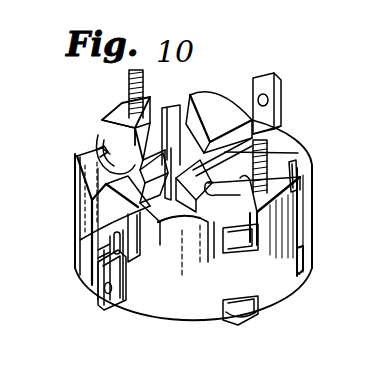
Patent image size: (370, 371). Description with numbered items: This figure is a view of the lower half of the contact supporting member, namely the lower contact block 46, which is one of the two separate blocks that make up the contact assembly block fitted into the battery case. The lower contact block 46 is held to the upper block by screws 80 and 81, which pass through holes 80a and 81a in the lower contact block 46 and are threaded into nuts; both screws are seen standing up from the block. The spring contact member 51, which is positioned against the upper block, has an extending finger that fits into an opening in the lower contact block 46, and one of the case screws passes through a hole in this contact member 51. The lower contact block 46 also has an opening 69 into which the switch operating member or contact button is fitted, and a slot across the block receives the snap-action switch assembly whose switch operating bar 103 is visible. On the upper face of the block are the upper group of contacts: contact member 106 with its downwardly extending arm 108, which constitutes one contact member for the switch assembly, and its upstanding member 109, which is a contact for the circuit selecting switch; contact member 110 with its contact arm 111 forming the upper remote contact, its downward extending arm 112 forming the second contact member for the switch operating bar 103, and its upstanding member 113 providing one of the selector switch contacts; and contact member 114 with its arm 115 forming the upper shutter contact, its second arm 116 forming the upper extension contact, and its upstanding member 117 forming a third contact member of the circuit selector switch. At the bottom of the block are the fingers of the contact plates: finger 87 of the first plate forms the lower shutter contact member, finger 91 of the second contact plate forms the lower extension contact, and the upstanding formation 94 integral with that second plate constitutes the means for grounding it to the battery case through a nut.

The lower contact block 46 is at (296, 216).
The screw 81 is at (128, 93).
The hole 81a is at (112, 113).
The contact member 106 is at (104, 170).
The downwardly extending arm 108 is at (78, 190).
The upstanding member 113 is at (80, 240).
The upstanding member 109 is at (163, 113).
The contact arm 111 is at (176, 122).
The spring contact member 51 is at (268, 112).
The screw 80 is at (284, 148).
The arm 115 is at (290, 170).
The hole 80a is at (302, 192).
The contact member 114 is at (236, 212).
The second arm 116 is at (233, 254).
The finger 87 is at (300, 277).
The upstanding member 117 is at (159, 201).
The contact member 110 is at (150, 246).
The downward extending arm 112 is at (200, 268).
The opening 69 is at (98, 249).
The switch operating bar 103 is at (97, 258).
The upstanding formation 94 is at (114, 312).
The finger 91 is at (242, 325).